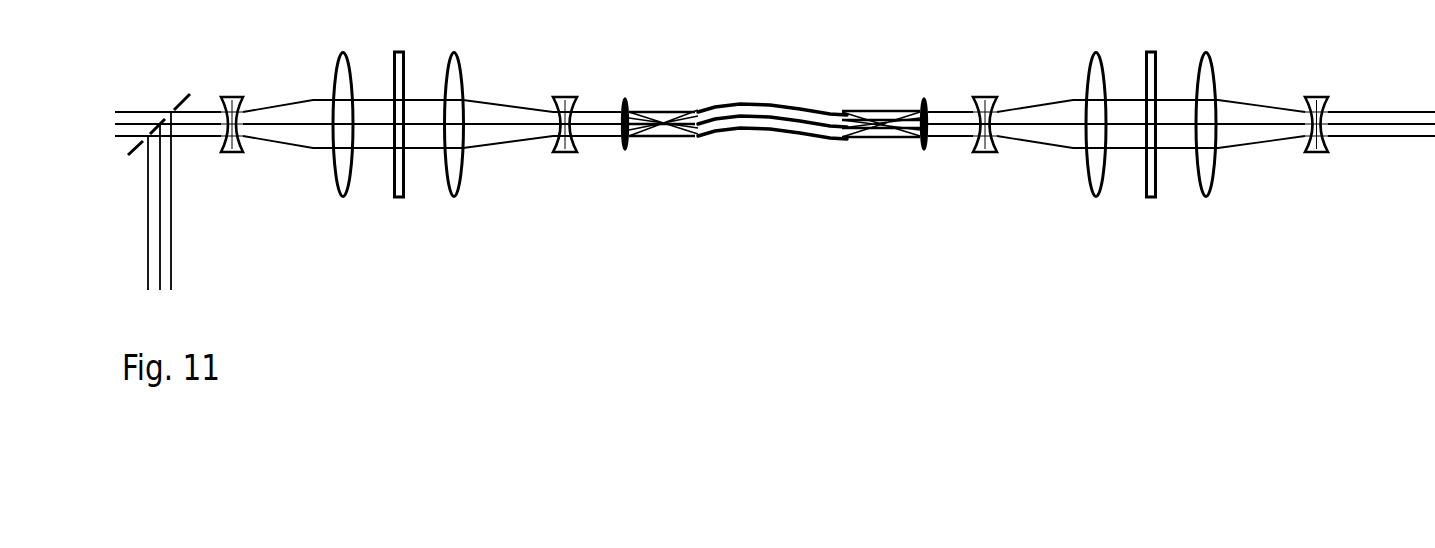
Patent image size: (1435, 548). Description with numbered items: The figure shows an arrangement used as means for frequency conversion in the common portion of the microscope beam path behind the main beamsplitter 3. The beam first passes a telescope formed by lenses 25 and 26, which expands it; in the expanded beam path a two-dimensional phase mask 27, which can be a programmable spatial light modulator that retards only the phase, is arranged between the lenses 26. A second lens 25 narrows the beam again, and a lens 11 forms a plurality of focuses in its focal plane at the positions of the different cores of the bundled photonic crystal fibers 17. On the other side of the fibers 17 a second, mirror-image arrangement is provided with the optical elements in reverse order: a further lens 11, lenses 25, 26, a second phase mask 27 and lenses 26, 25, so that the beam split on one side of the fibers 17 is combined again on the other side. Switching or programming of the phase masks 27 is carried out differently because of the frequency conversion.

The main beamsplitter 3 is at (178, 97).
The lens 11 is at (625, 98).
The photonic crystal fiber 17 is at (735, 140).
The lens 25 is at (231, 154).
The lens 26 is at (344, 198).
The phase mask 27 is at (400, 198).